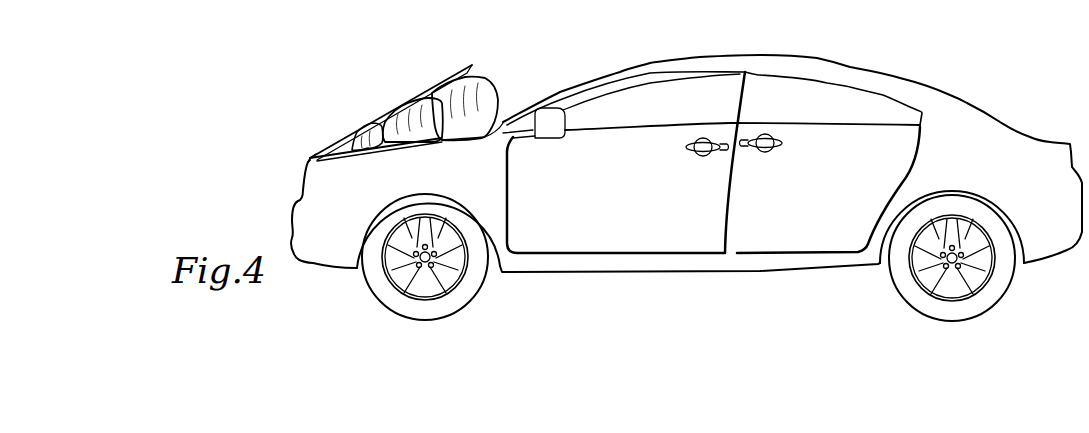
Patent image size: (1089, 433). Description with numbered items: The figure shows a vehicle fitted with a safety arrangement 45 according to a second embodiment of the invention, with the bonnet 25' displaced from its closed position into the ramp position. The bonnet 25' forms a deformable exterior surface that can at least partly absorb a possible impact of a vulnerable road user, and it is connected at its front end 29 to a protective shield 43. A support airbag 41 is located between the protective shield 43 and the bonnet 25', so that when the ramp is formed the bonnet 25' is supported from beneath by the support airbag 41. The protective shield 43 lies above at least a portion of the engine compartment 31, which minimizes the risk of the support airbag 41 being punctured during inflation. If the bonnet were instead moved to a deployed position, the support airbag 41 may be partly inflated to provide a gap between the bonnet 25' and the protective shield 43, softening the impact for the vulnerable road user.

The bonnet 25' is at (419, 86).
The support airbag 41 is at (486, 89).
The protective shield 43 is at (366, 150).
The safety arrangement 45 is at (360, 91).
The front end 29 is at (305, 163).
The engine compartment 31 is at (437, 157).